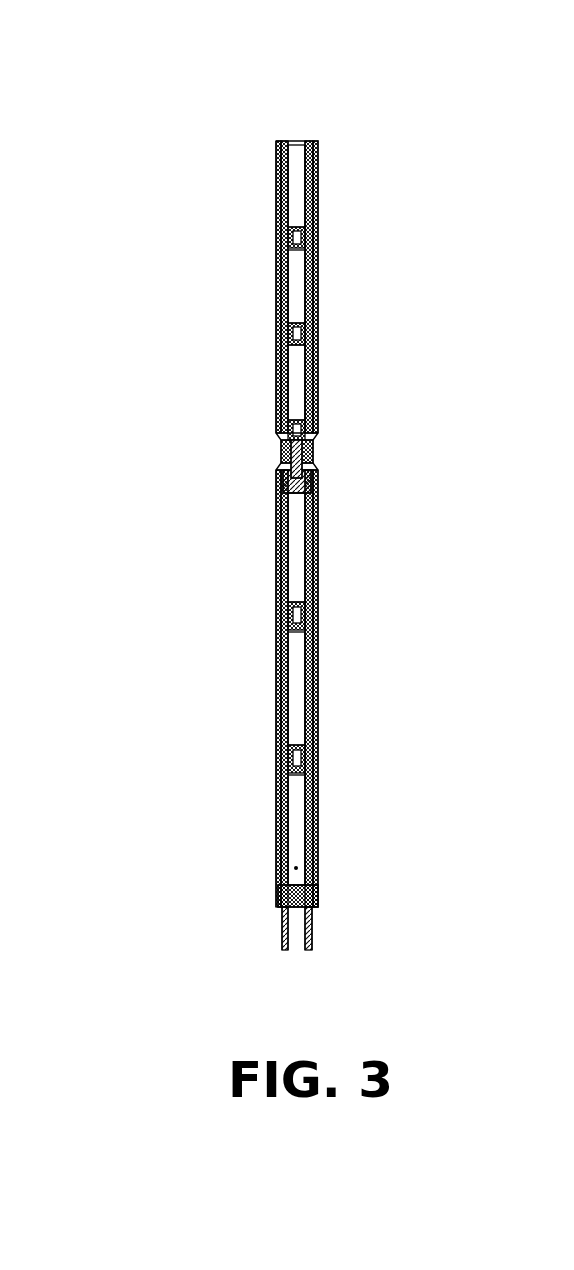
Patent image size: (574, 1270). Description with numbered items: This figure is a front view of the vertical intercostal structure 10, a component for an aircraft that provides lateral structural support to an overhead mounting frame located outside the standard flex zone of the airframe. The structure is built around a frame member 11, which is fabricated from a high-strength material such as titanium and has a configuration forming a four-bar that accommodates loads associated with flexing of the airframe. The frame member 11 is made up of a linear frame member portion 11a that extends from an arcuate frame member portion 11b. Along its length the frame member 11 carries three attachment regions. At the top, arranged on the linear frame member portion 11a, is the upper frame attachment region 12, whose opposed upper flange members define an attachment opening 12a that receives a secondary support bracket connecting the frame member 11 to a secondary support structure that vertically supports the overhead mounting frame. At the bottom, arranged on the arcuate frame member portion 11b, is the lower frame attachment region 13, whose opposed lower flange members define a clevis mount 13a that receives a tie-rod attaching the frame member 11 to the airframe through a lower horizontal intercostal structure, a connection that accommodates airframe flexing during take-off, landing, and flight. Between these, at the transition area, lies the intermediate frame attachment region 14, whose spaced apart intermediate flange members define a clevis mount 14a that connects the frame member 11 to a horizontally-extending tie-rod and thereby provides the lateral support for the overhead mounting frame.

The vertical intercostal structure 10 is at (138, 115).
The frame member 11 is at (278, 368).
The linear frame member portion 11a is at (310, 282).
The arcuate frame member portion 11b is at (305, 697).
The upper frame attachment region 12 is at (260, 180).
The attachment opening 12a is at (298, 170).
The lower frame attachment region 13 is at (260, 927).
The clevis mount 13a is at (305, 930).
The intermediate frame attachment region 14 is at (260, 460).
The clevis mount 14a is at (308, 462).